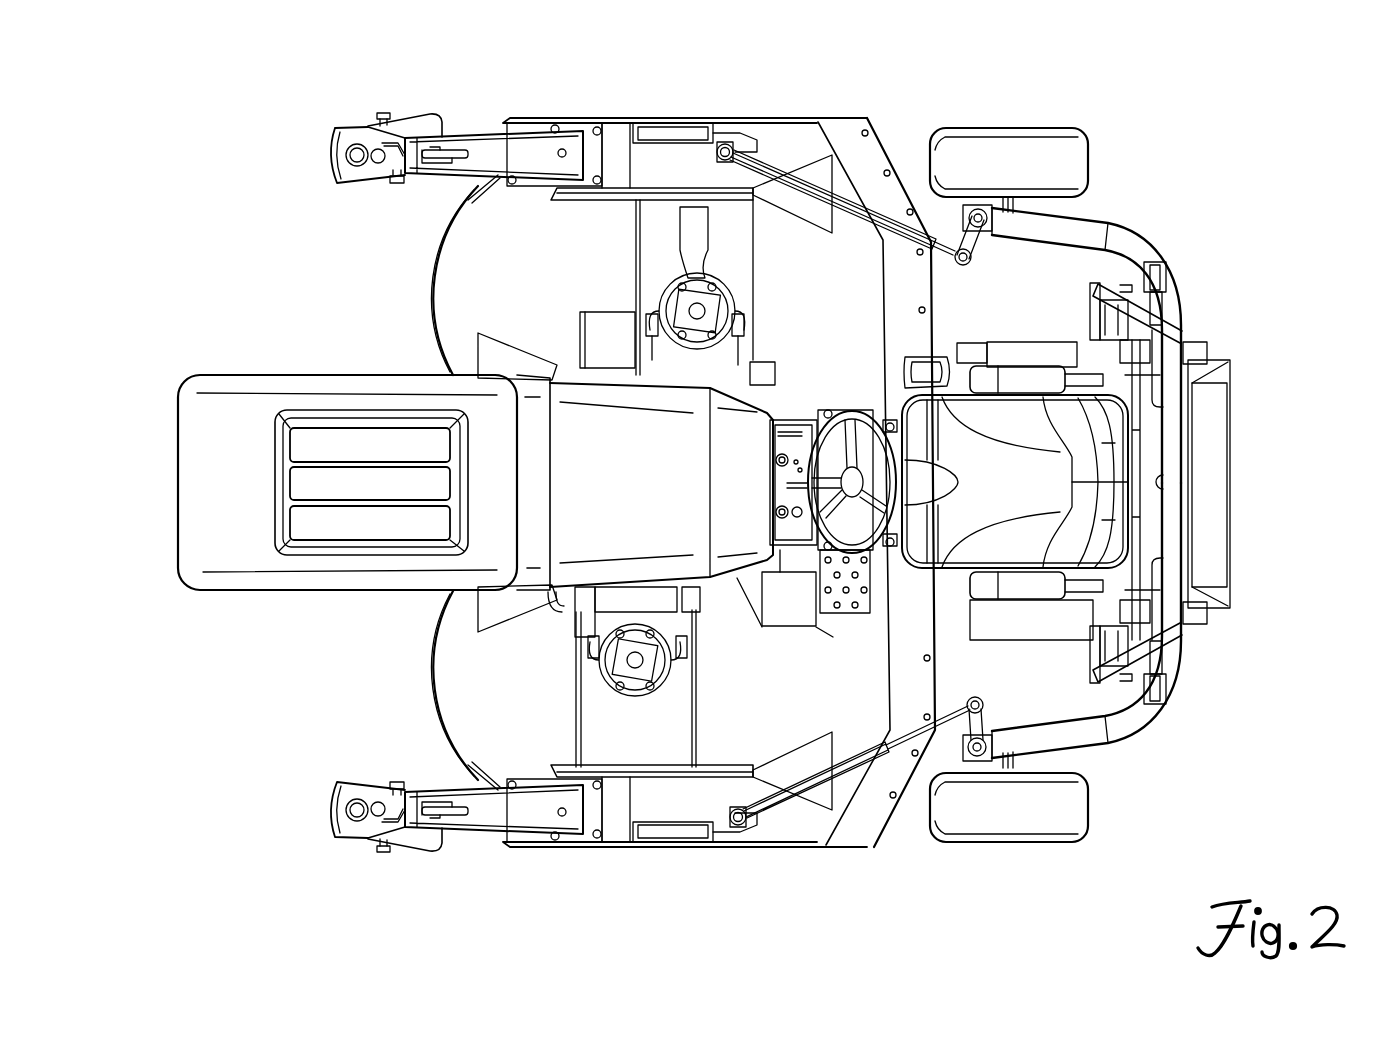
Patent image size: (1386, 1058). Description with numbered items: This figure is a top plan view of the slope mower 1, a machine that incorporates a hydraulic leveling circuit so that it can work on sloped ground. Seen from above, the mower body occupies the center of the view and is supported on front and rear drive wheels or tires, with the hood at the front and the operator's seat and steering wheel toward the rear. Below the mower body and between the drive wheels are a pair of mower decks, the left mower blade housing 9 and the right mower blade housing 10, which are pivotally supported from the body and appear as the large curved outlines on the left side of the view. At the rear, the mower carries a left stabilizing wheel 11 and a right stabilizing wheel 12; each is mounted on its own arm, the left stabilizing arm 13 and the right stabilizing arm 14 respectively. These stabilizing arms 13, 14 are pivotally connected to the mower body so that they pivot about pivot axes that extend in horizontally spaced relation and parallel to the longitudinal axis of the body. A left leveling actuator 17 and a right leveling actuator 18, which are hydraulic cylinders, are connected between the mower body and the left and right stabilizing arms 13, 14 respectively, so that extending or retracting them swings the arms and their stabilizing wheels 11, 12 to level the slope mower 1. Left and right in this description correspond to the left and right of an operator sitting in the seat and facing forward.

The slope mower 1 is at (196, 284).
The left mower blade housing 9 is at (447, 657).
The right mower blade housing 10 is at (432, 285).
The left stabilizing wheel 11 is at (1015, 842).
The right stabilizing wheel 12 is at (1042, 128).
The left stabilizing arm 13 is at (1118, 742).
The right stabilizing arm 14 is at (1130, 232).
The left leveling actuator 17 is at (1165, 660).
The right leveling actuator 18 is at (1162, 305).